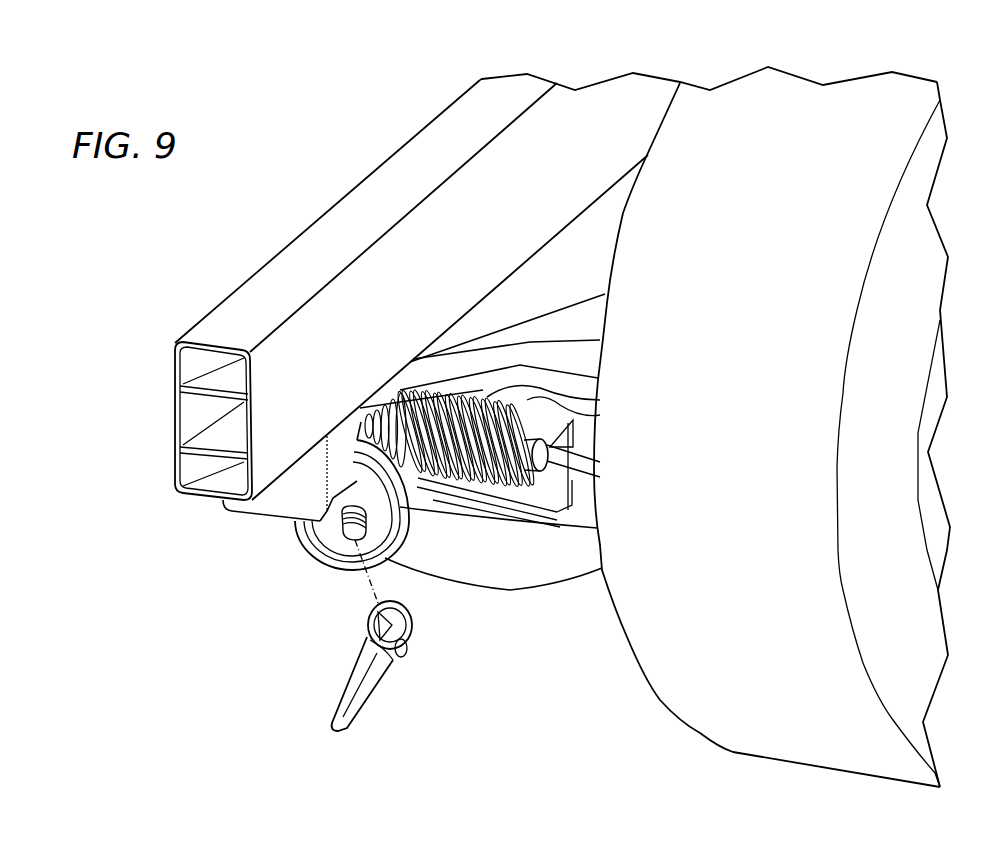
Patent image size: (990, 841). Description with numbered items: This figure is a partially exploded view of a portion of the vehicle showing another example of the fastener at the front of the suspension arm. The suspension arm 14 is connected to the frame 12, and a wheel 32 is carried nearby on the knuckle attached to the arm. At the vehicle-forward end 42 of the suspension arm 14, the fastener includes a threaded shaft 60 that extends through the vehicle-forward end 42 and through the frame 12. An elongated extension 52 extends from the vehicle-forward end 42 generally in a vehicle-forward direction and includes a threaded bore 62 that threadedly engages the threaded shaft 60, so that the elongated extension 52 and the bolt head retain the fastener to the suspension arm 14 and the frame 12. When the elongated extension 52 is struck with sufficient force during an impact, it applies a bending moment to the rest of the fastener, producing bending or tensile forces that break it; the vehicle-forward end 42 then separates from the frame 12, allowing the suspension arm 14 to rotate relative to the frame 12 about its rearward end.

The frame 12 is at (378, 193).
The suspension arm 14 is at (503, 563).
The wheel 32 is at (683, 673).
The vehicle-forward end 42 is at (472, 557).
The elongated extension 52 is at (343, 697).
The threaded shaft 60 is at (352, 540).
The threaded bore 62 is at (380, 640).